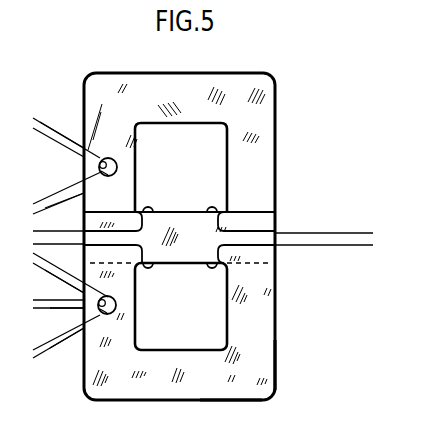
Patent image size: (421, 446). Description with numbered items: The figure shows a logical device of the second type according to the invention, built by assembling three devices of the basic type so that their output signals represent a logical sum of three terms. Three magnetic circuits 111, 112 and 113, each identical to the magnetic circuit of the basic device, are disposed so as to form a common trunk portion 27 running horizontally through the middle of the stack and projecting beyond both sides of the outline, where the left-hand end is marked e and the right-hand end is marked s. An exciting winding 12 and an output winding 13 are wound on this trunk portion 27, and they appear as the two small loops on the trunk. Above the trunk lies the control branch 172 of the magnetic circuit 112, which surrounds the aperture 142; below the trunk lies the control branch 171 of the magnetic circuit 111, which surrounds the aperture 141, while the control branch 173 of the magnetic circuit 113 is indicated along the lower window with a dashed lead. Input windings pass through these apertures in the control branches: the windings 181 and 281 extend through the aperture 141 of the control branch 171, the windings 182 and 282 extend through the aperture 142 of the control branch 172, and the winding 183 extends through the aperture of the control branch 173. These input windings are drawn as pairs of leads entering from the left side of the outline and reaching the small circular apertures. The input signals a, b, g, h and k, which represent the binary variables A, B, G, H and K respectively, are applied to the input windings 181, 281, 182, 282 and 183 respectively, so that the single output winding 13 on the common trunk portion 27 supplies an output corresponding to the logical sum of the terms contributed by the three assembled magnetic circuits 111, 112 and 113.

The magnetic circuit 112 is at (236, 73).
The magnetic circuit 111 is at (275, 381).
The magnetic circuit 113 is at (253, 391).
The control branch 172 is at (136, 136).
The control branch 171 is at (133, 320).
The control branch 173 is at (124, 336).
The common trunk portion 27 is at (172, 212).
The exciting winding 12 is at (151, 268).
The output winding 13 is at (212, 268).
The aperture 142 is at (117, 167).
The aperture 141 is at (116, 304).
The input winding 182 is at (45, 123).
The input winding 282 is at (62, 198).
The input winding 181 is at (52, 270).
The input winding 183 is at (55, 308).
The input winding 281 is at (53, 349).
The signal g is at (59, 137).
The signal h is at (60, 197).
The strip end e is at (48, 240).
The strip s is at (334, 241).
The signal a is at (64, 273).
The signal k is at (49, 304).
The signal b is at (59, 339).